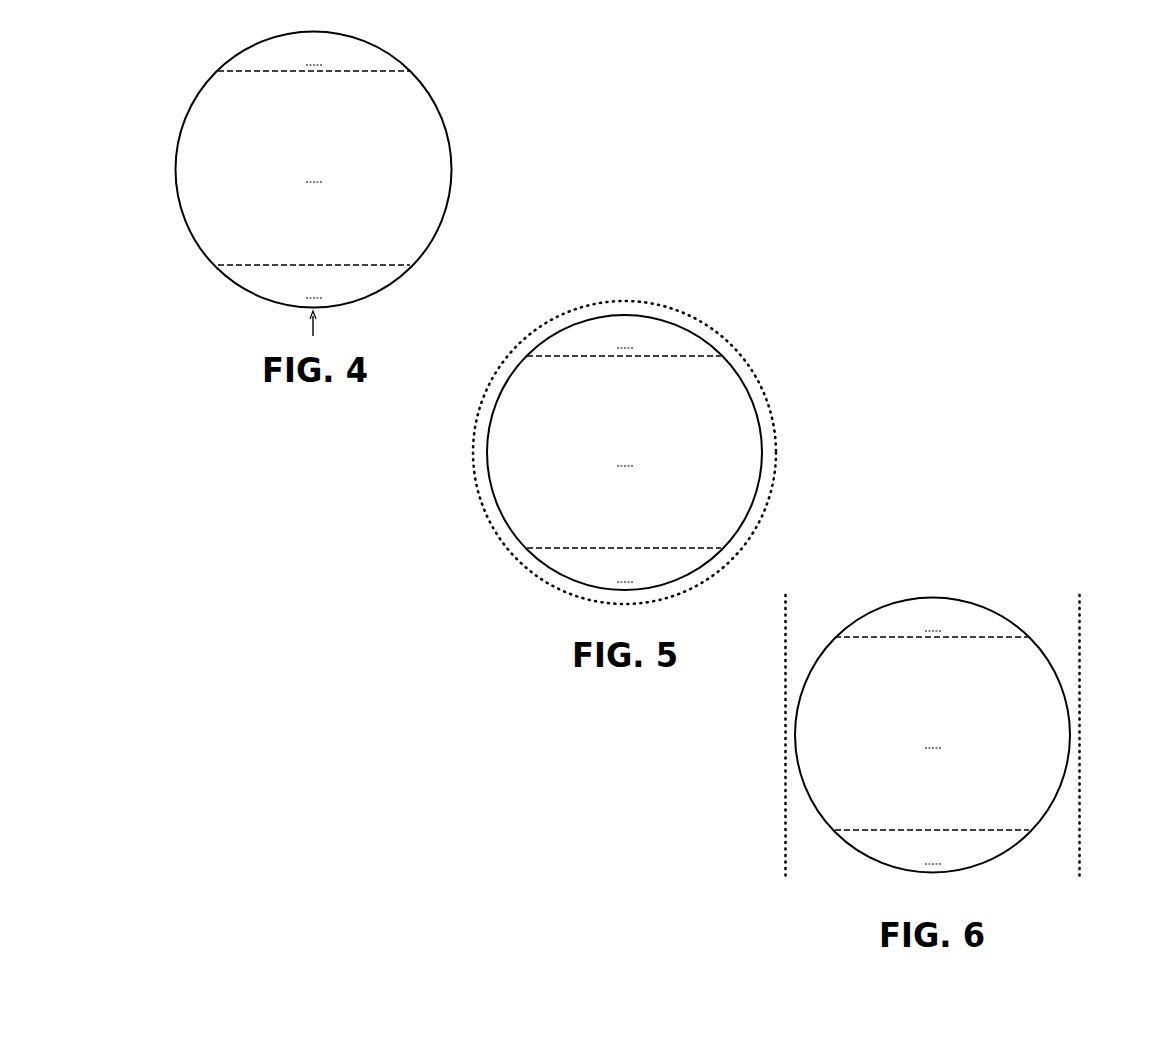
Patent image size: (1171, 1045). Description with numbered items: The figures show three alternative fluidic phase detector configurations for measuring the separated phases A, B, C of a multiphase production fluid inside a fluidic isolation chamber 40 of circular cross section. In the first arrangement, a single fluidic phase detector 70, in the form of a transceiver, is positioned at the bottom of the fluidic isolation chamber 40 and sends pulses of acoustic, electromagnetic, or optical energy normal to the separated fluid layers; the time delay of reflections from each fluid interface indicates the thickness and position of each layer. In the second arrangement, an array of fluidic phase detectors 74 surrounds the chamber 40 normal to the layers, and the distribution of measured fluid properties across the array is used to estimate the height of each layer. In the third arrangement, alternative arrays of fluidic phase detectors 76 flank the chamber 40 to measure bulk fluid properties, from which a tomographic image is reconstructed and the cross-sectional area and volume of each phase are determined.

In FIG. 4, the fluidic isolation chamber 40 is at (452, 168).
In FIG. 5, the fluidic isolation chamber 40 is at (762, 457).
In FIG. 6, the fluidic isolation chamber 40 is at (1070, 735).
In FIG. 4, the fluidic phase detector 70 is at (309, 314).
In FIG. 5, the array of fluidic phase detectors 74 is at (516, 556).
In FIG. 6, the alternative arrays of fluidic phase detectors 76 is at (785, 842).